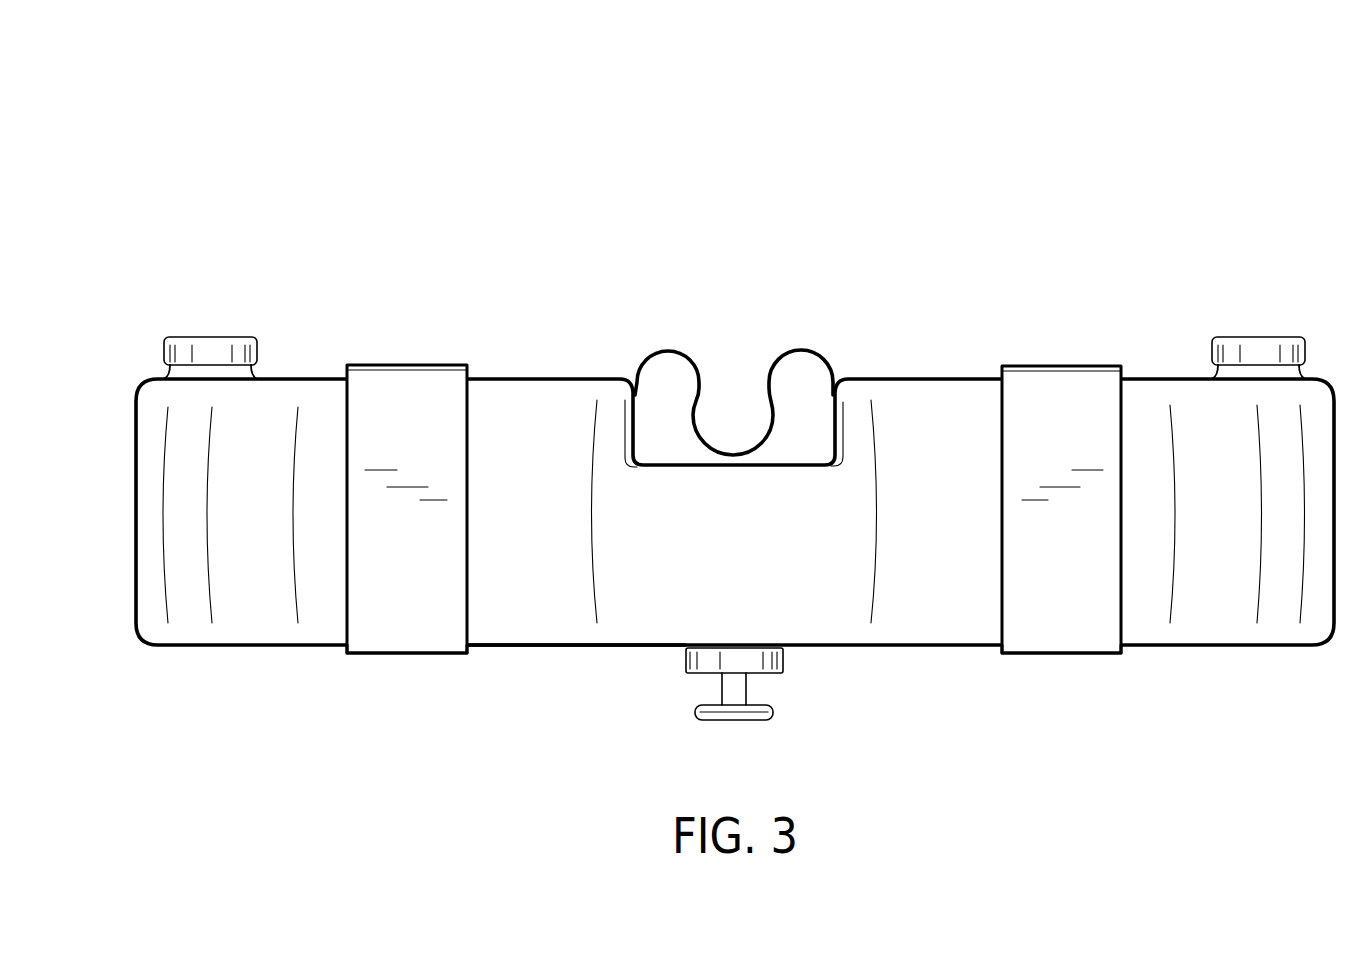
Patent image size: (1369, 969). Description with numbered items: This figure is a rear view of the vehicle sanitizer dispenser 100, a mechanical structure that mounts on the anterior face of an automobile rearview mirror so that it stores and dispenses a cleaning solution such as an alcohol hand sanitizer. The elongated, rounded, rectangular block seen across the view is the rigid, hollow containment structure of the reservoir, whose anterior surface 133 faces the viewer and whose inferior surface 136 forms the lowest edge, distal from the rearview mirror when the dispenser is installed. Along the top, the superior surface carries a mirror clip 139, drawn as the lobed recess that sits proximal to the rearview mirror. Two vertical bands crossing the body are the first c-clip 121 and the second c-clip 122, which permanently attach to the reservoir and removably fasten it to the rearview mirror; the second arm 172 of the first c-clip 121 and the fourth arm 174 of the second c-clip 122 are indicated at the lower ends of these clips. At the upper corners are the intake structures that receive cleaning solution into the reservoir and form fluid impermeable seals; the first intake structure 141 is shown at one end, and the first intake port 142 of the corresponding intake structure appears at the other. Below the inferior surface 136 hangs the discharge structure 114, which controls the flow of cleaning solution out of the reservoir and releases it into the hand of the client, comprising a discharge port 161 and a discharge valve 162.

The vehicle sanitizer dispenser 100 is at (1141, 145).
The discharge structure 114 is at (826, 708).
The first c-clip 121 is at (1052, 393).
The second c-clip 122 is at (400, 407).
The anterior surface 133 is at (920, 430).
The inferior surface 136 is at (545, 647).
The mirror clip 139 is at (792, 372).
The first intake structure 141 is at (1262, 352).
The first intake port 142 is at (215, 350).
The discharge port 161 is at (775, 663).
The discharge valve 162 is at (781, 730).
The second arm 172 is at (1060, 653).
The fourth arm 174 is at (396, 638).